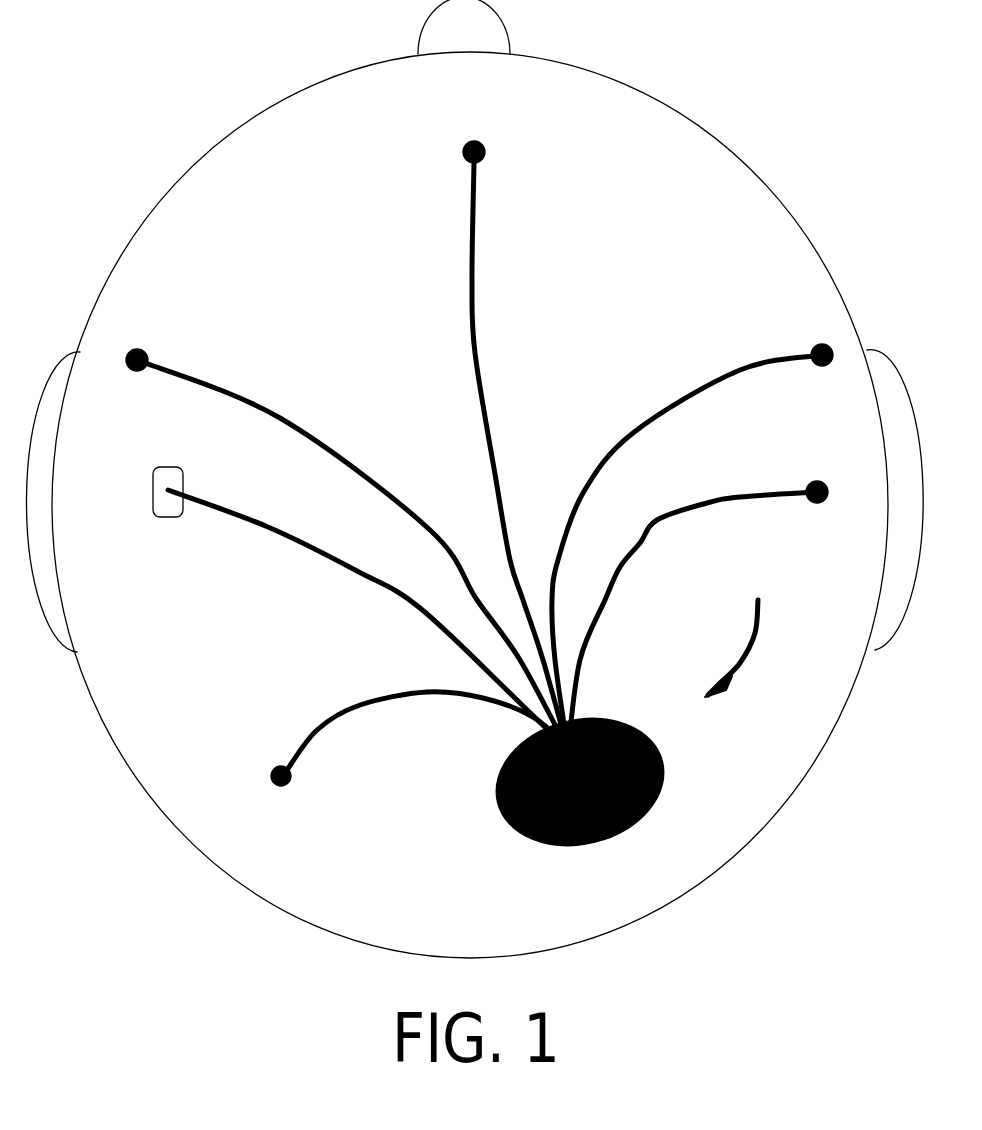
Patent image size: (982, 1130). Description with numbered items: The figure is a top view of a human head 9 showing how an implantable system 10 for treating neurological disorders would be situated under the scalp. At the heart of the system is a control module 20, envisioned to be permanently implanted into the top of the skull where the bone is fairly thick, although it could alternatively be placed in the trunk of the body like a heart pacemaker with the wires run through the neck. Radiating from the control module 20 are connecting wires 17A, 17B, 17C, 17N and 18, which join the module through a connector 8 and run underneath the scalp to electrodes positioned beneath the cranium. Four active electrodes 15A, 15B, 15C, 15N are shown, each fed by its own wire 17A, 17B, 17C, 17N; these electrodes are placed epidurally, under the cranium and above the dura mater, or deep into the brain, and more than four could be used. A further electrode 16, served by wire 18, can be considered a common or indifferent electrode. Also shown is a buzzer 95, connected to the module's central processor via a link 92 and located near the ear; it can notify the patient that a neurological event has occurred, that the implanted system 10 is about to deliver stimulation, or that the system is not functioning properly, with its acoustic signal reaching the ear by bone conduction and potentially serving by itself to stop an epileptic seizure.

The connector 8 is at (520, 745).
The human head 9 is at (790, 217).
The implantable system 10 is at (747, 613).
The electrode 15A is at (277, 790).
The electrode 15B is at (141, 348).
The electrode 15C is at (485, 147).
The electrode 15N is at (822, 345).
The electrode 16 is at (817, 480).
The connecting wire 17A is at (360, 705).
The connecting wire 17B is at (280, 416).
The connecting wire 17C is at (477, 352).
The connecting wire 17N is at (630, 435).
The connecting wire 18 is at (710, 502).
The control module 20 is at (592, 842).
The link 92 is at (313, 540).
The buzzer 95 is at (165, 467).